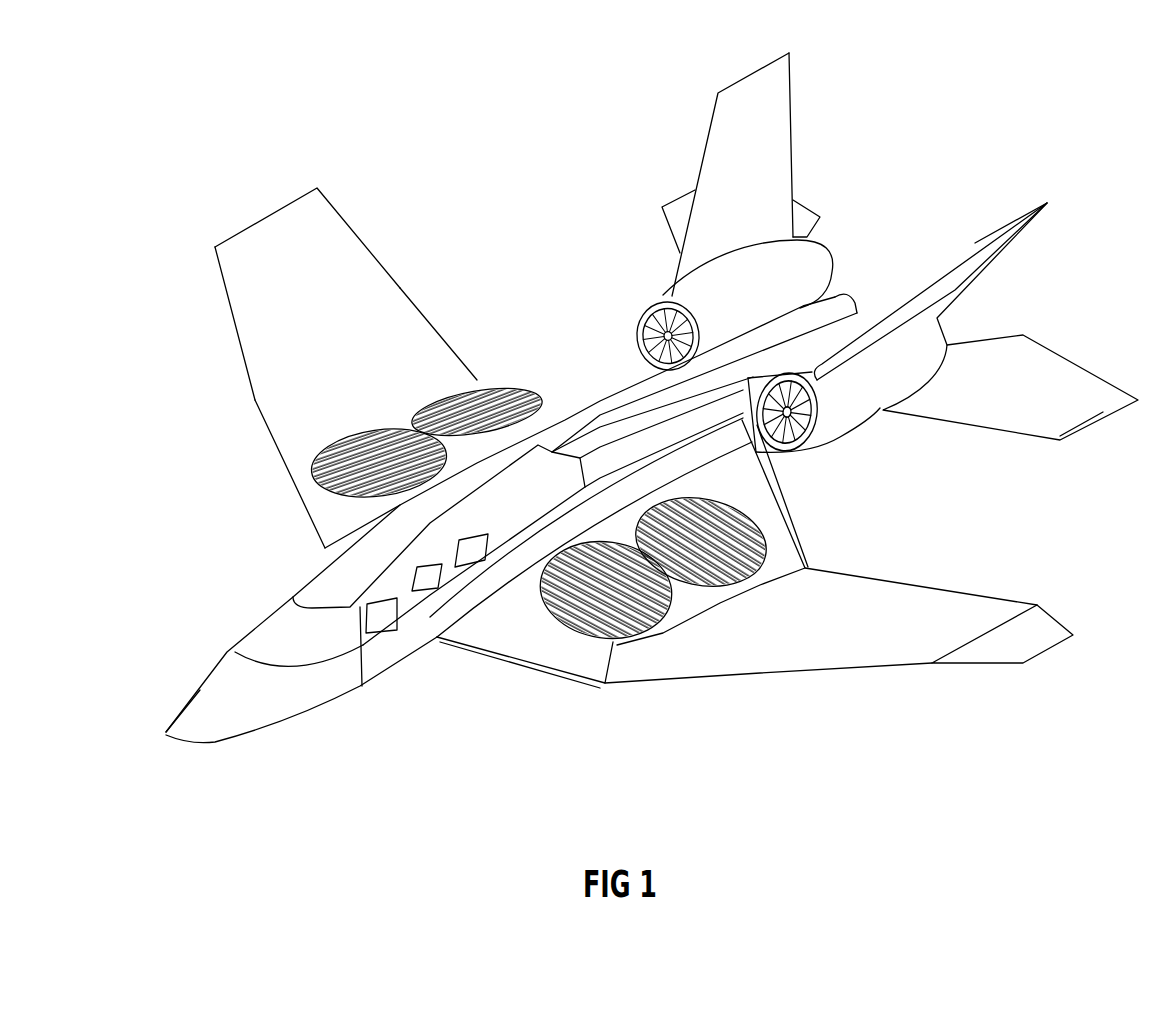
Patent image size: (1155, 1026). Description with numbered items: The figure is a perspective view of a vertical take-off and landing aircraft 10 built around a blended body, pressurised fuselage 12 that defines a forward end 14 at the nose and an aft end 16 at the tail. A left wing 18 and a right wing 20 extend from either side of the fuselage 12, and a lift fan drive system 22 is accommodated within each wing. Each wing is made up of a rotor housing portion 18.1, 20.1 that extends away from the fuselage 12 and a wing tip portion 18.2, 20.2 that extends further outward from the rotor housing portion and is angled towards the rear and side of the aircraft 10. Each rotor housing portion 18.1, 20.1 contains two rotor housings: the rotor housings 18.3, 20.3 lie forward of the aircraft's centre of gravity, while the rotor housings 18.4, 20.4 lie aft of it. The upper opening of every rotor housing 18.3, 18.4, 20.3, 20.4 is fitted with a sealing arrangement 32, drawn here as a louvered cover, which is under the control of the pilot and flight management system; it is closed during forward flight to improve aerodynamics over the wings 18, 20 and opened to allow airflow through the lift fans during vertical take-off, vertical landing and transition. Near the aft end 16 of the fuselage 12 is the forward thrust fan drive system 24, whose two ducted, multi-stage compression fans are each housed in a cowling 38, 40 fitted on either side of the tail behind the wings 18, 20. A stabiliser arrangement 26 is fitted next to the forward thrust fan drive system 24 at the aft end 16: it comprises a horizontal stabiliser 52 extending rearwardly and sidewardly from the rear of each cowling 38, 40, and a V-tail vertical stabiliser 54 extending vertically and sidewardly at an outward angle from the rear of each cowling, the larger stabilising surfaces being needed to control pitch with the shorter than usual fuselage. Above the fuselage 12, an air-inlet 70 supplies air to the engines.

The vertical take-off and landing aircraft 10 is at (470, 733).
The fuselage 12 is at (410, 617).
The forward end 14 is at (313, 715).
The aft end 16 is at (868, 296).
The left wing 18 is at (812, 650).
The rotor housing portion 18.1 is at (508, 613).
The wing tip portion 18.2 is at (945, 605).
The rotor housing 18.3 is at (615, 640).
The rotor housing 18.4 is at (760, 542).
The right wing 20 is at (275, 340).
The rotor housing portion 20.1 is at (332, 517).
The wing tip portion 20.2 is at (352, 258).
The rotor housing 20.3 is at (300, 465).
The rotor housing 20.4 is at (473, 385).
The lift fan drive system 22 is at (460, 410).
The forward thrust fan drive system 24 is at (665, 320).
The stabiliser arrangement 26 is at (797, 197).
The sealing arrangement 32 is at (505, 393).
The cowling 38 is at (803, 268).
The cowling 40 is at (848, 412).
The horizontal stabiliser 52 is at (807, 203).
The V-tail vertical stabiliser 54 is at (763, 113).
The air-inlet 70 is at (547, 450).